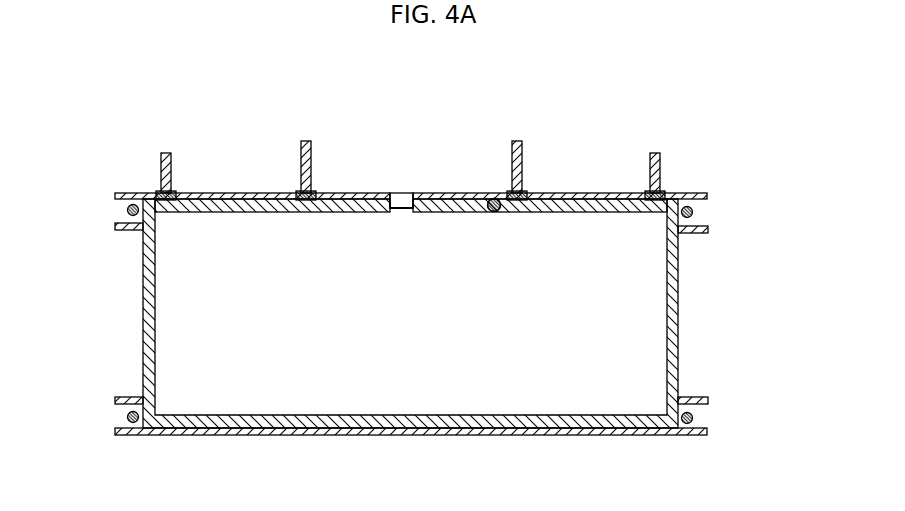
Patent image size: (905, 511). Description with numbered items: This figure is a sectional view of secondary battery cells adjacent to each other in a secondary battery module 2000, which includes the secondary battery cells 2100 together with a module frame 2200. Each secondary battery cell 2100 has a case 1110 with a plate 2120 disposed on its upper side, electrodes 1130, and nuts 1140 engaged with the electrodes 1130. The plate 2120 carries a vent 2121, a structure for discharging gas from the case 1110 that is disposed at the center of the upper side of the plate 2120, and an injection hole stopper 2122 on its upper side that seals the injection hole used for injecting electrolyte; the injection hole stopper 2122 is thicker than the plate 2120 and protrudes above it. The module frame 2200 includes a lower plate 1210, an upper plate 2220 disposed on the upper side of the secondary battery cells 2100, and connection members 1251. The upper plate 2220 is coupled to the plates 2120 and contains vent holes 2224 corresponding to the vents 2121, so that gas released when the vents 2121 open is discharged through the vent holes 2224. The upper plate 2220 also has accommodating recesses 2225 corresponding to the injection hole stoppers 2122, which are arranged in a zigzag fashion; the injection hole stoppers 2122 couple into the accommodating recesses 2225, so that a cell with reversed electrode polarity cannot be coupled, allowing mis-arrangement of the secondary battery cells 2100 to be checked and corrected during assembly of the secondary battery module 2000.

The secondary battery module 2000 is at (62, 100).
The secondary battery cell 2100 is at (789, 150).
The case 1110 is at (680, 270).
The nut 1140 is at (668, 193).
The electrode 1130 is at (662, 166).
The plate 2120 is at (692, 213).
The module frame 2200 is at (106, 176).
The upper plate 2220 is at (113, 194).
The vent hole 2224 is at (392, 192).
The accommodating recess 2225 is at (480, 196).
The vent 2121 is at (402, 215).
The injection hole stopper 2122 is at (494, 212).
The connection member 1251 is at (128, 212).
The lower plate 1210 is at (115, 430).